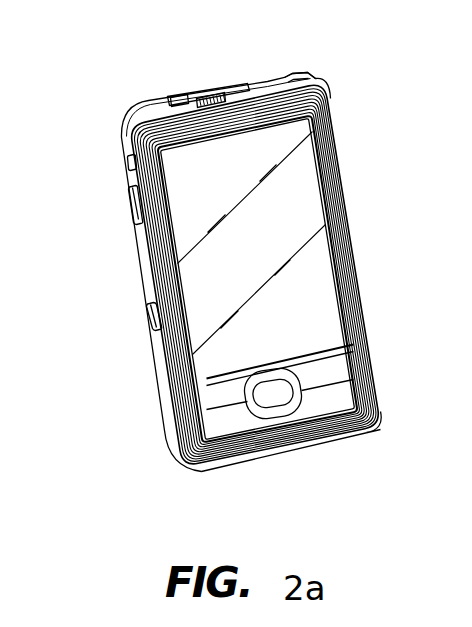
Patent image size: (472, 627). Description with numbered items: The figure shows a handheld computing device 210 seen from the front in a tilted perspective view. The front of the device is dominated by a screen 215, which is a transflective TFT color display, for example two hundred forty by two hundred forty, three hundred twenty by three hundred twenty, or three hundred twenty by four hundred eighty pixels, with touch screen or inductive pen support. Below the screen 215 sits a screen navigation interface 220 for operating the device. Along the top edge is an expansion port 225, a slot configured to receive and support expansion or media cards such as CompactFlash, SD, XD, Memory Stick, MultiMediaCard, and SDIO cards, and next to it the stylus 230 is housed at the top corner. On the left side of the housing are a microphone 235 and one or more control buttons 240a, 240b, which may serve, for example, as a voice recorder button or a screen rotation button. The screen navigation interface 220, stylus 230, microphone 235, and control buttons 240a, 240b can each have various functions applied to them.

The handheld computing device 210 is at (400, 488).
The screen 215 is at (308, 186).
The screen navigation interface 220 is at (267, 407).
The expansion port 225 is at (221, 81).
The stylus 230 is at (296, 68).
The microphone 235 is at (126, 161).
The control button 240a is at (125, 199).
The control button 240b is at (146, 305).